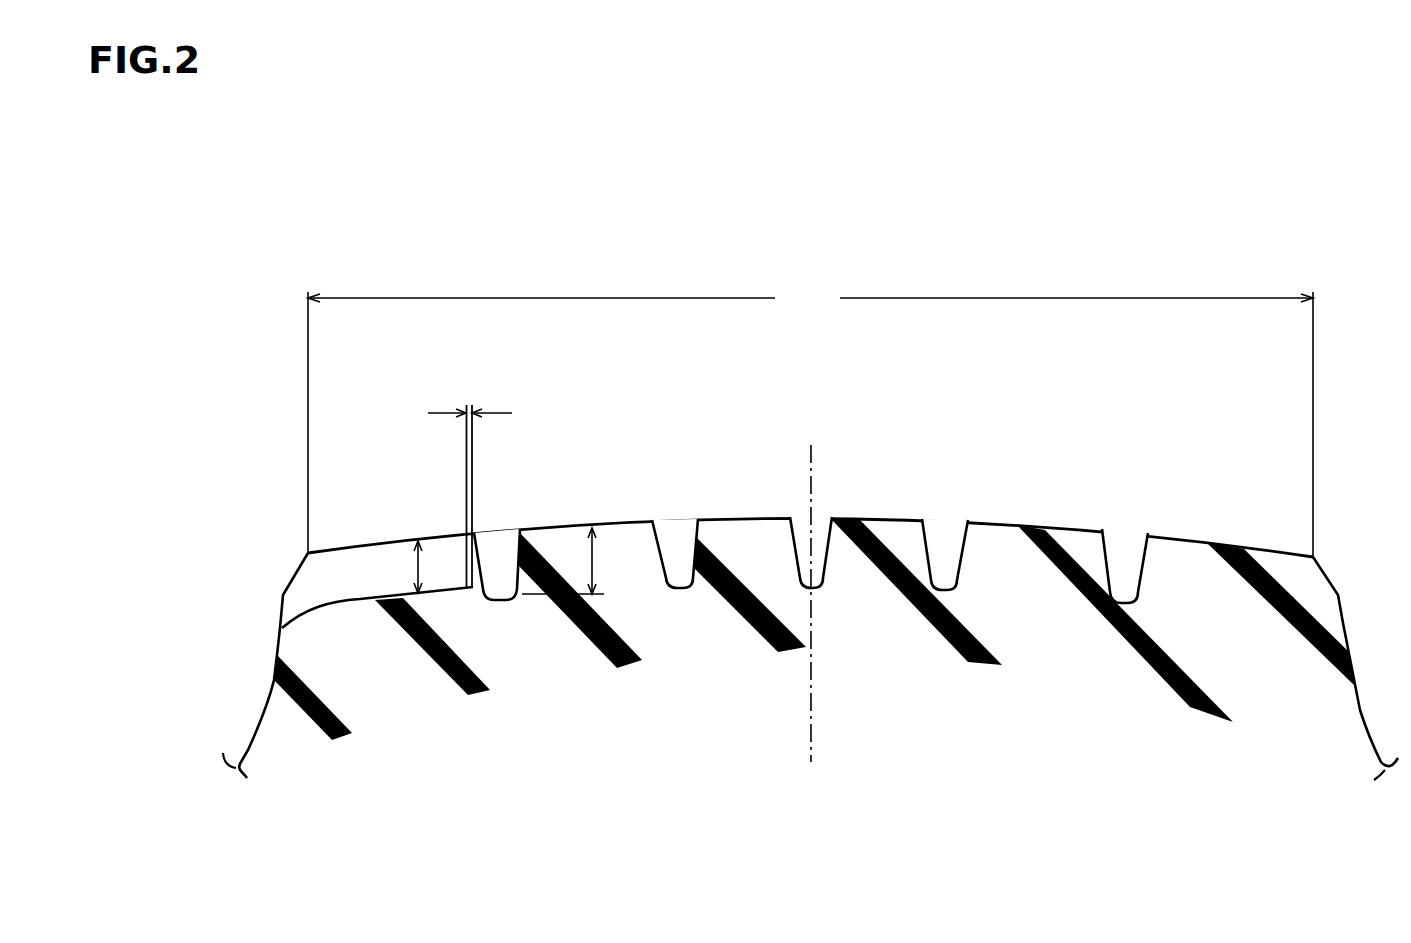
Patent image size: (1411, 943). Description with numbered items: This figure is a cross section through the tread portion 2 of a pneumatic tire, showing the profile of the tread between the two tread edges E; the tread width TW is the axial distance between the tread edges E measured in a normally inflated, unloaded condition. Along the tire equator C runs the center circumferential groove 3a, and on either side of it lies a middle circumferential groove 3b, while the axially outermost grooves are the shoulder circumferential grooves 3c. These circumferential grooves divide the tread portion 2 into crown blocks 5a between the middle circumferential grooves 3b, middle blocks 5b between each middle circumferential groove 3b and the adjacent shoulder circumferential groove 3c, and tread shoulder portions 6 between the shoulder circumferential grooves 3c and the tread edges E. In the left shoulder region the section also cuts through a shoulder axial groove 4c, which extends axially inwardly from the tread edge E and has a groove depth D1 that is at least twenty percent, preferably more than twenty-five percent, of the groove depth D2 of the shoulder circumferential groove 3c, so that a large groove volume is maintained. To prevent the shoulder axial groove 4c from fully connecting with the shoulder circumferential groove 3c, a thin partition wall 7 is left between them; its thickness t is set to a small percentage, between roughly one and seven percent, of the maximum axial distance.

The tread portion 2 is at (1258, 533).
The center circumferential groove 3a is at (818, 533).
The middle circumferential groove 3b is at (682, 533).
The shoulder circumferential groove 3c is at (502, 563).
The shoulder axial groove 4c is at (363, 598).
The crown block 5a is at (750, 535).
The middle block 5b is at (628, 533).
The tread shoulder portion 6 is at (1172, 532).
The partition wall 7 is at (470, 563).
The tire equator C is at (812, 588).
The tread edge E is at (308, 553).
The tread width TW is at (810, 420).
The groove depth of shoulder axial groove D1 is at (417, 557).
The groove depth of shoulder circumferential groove D2 is at (581, 561).
The thickness of partition wall t is at (470, 397).